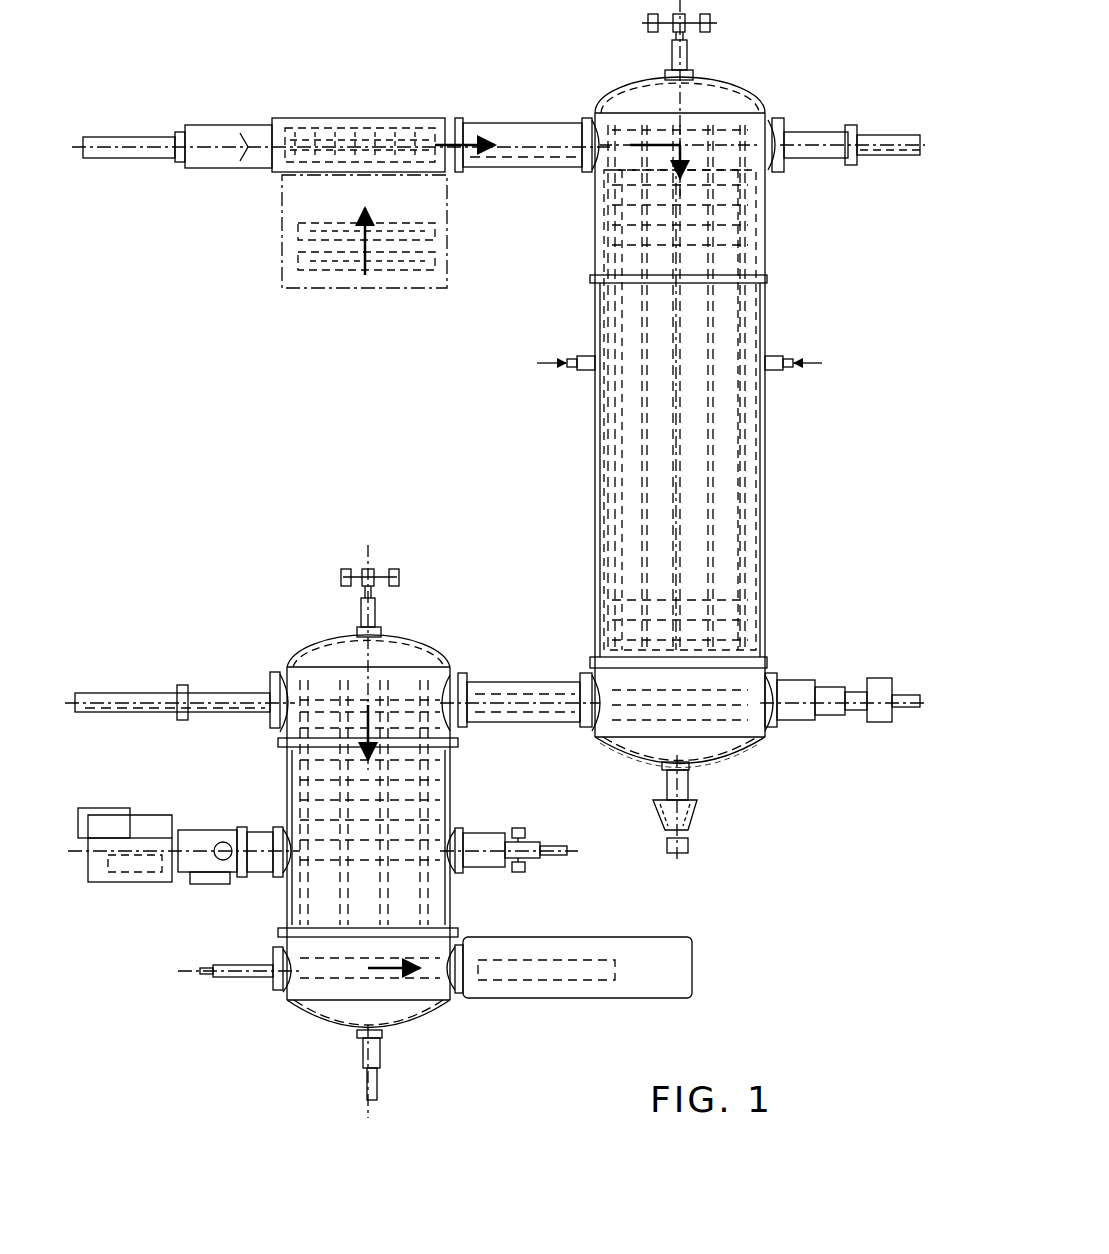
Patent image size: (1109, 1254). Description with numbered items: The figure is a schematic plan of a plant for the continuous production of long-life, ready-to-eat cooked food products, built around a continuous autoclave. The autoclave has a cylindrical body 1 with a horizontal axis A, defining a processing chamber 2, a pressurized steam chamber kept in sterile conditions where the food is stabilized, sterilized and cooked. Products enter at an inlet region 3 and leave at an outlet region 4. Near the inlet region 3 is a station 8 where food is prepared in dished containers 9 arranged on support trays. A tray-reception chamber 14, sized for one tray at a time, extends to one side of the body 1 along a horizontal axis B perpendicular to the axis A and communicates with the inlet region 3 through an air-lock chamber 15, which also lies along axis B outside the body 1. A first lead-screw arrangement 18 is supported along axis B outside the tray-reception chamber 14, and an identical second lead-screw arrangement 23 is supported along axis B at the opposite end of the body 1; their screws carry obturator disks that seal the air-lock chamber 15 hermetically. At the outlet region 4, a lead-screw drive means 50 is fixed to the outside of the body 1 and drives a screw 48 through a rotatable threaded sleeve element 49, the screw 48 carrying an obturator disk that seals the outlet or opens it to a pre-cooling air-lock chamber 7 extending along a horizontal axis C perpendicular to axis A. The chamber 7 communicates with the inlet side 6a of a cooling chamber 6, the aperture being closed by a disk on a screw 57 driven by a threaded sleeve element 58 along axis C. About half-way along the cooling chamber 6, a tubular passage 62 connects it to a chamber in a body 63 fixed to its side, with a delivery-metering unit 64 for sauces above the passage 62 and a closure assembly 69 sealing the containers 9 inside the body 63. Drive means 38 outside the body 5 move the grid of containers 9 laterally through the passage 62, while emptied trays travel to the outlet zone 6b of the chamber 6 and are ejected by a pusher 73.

The cylindrical body 1 is at (596, 304).
The processing chamber 2 is at (622, 447).
The inlet region 3 is at (718, 126).
The outlet region 4 is at (627, 725).
The body 5 is at (450, 788).
The cooling chamber 6 is at (320, 898).
The inlet side 6a is at (405, 677).
The outlet zone 6b is at (332, 995).
The pre-cooling air-lock chamber 7 is at (505, 683).
The station 8 is at (278, 245).
The dished container 9 is at (408, 125).
The tray-reception chamber 14 is at (306, 122).
The air-lock chamber 15 is at (490, 124).
The first lead-screw arrangement 18 is at (230, 122).
The second lead-screw arrangement 23 is at (812, 126).
The drive means 38 is at (490, 835).
The screw 48 is at (842, 739).
The threaded sleeve element 49 is at (820, 717).
The lead-screw drive means 50 is at (880, 680).
The screw 57 is at (180, 672).
The threaded sleeve element 58 is at (272, 643).
The tubular passage 62 is at (258, 832).
The body 63 is at (150, 822).
The delivery-metering unit 64 is at (220, 861).
The closure assembly 69 is at (132, 878).
The pusher 73 is at (242, 977).
The horizontal axis A is at (676, 484).
The horizontal axis B is at (520, 143).
The horizontal axis C is at (130, 696).